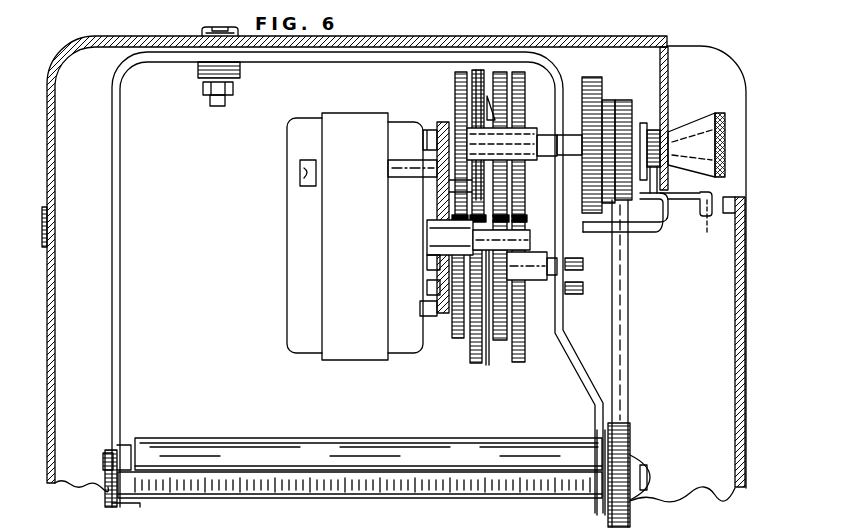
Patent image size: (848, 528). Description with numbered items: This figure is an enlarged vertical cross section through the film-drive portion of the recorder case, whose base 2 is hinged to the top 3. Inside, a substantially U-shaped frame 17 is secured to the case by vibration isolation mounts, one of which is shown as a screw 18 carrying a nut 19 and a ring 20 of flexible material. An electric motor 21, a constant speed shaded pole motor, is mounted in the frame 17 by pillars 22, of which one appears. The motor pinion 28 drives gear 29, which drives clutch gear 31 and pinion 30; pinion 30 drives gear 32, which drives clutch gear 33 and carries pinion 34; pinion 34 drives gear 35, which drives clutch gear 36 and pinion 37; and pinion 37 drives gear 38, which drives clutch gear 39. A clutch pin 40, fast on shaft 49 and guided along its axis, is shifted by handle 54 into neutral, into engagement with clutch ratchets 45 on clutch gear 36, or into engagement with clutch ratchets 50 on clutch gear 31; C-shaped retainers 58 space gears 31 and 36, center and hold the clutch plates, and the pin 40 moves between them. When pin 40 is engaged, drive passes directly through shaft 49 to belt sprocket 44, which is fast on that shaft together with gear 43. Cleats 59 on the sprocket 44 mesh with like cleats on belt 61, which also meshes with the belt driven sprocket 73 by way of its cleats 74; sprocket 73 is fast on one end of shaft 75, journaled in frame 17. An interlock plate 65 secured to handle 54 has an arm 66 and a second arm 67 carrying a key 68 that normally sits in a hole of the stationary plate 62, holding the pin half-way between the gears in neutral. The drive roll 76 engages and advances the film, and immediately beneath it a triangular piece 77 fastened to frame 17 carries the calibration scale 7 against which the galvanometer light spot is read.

The base 2 is at (46, 445).
The top 3 is at (126, 37).
The calibration scale 7 is at (72, 135).
The frame 17 is at (112, 272).
The screw 18 is at (215, 106).
The nut 19 is at (207, 88).
The ring 20 is at (200, 70).
The electric motor 21 is at (298, 206).
The pillar 22 is at (412, 164).
The motor pinion 28 is at (448, 240).
The gear 29 is at (458, 338).
The pinion 30 is at (457, 265).
The clutch gear 31 is at (456, 76).
The gear 32 is at (476, 364).
The clutch gear 33 is at (484, 72).
The pinion 34 is at (487, 365).
The gear 35 is at (500, 342).
The clutch gear 36 is at (500, 72).
The pinion 37 is at (520, 284).
The gear 38 is at (520, 362).
The clutch gear 39 is at (518, 72).
The clutch pin 40 is at (477, 72).
The gear 43 is at (592, 78).
The belt sprocket 44 is at (624, 105).
The clutch ratchets 45 is at (492, 108).
The shaft 49 is at (444, 124).
The clutch ratchets 50 is at (470, 186).
The handle 54 is at (718, 113).
The C-shaped retainers 58 is at (487, 141).
The cleats 59 is at (608, 102).
The belt 61 is at (628, 317).
The stationary plate 62 is at (723, 200).
The plate 65 is at (720, 222).
The arm 66 is at (647, 140).
The second arm 67 is at (671, 180).
The key 68 is at (705, 210).
The belt driven sprocket 73 is at (628, 439).
The cleats 74 is at (626, 447).
The shaft 75 is at (647, 472).
The drive roll 76 is at (248, 446).
The triangular piece 77 is at (340, 472).